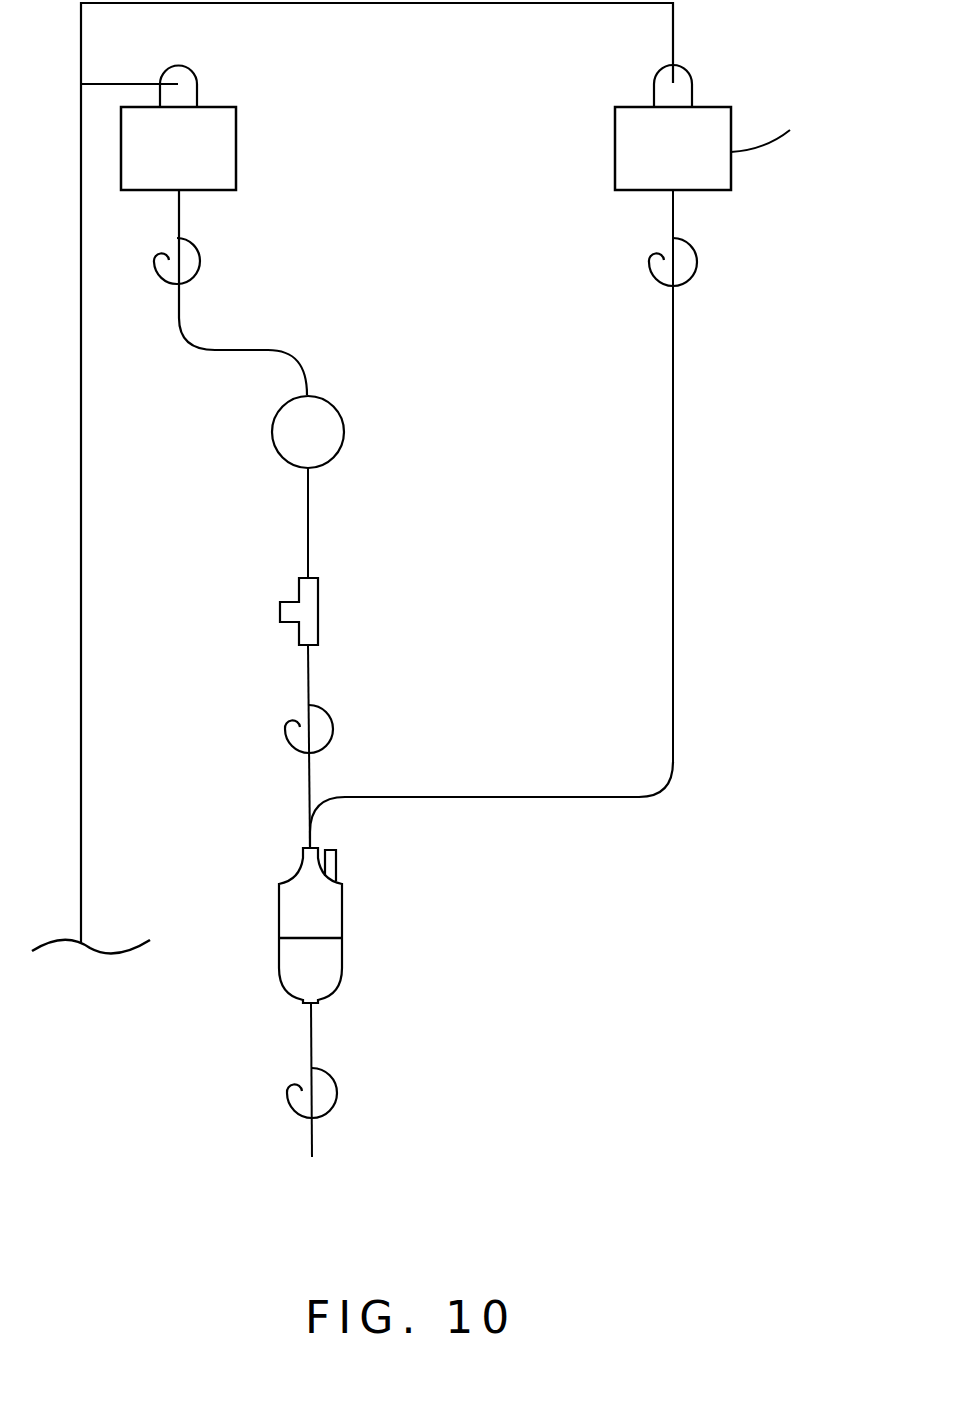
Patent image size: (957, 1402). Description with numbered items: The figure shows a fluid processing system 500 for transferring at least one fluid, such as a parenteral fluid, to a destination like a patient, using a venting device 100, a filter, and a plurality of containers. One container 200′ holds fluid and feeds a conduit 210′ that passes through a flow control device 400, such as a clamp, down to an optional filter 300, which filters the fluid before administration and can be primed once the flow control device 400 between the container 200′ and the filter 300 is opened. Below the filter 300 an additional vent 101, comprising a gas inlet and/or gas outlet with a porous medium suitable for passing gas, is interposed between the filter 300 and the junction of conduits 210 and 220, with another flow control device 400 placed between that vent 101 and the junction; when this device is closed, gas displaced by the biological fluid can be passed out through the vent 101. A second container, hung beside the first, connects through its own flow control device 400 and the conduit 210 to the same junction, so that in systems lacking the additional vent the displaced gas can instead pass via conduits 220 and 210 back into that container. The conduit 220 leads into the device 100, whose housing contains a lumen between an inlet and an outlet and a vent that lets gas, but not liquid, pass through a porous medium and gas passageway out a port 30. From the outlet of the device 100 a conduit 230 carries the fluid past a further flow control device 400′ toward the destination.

The container 200′ is at (237, 150).
The conduit 210′ is at (188, 334).
The conduit 210 is at (676, 457).
The flow control device 400 is at (201, 252).
The filter 300 is at (333, 405).
The additional vent 101 is at (316, 614).
The conduit 220 is at (308, 782).
The device 100 is at (343, 908).
The port 30 is at (337, 862).
The conduit 230 is at (310, 1045).
The flow control device 400′ is at (337, 1096).
The system 500 is at (782, 927).